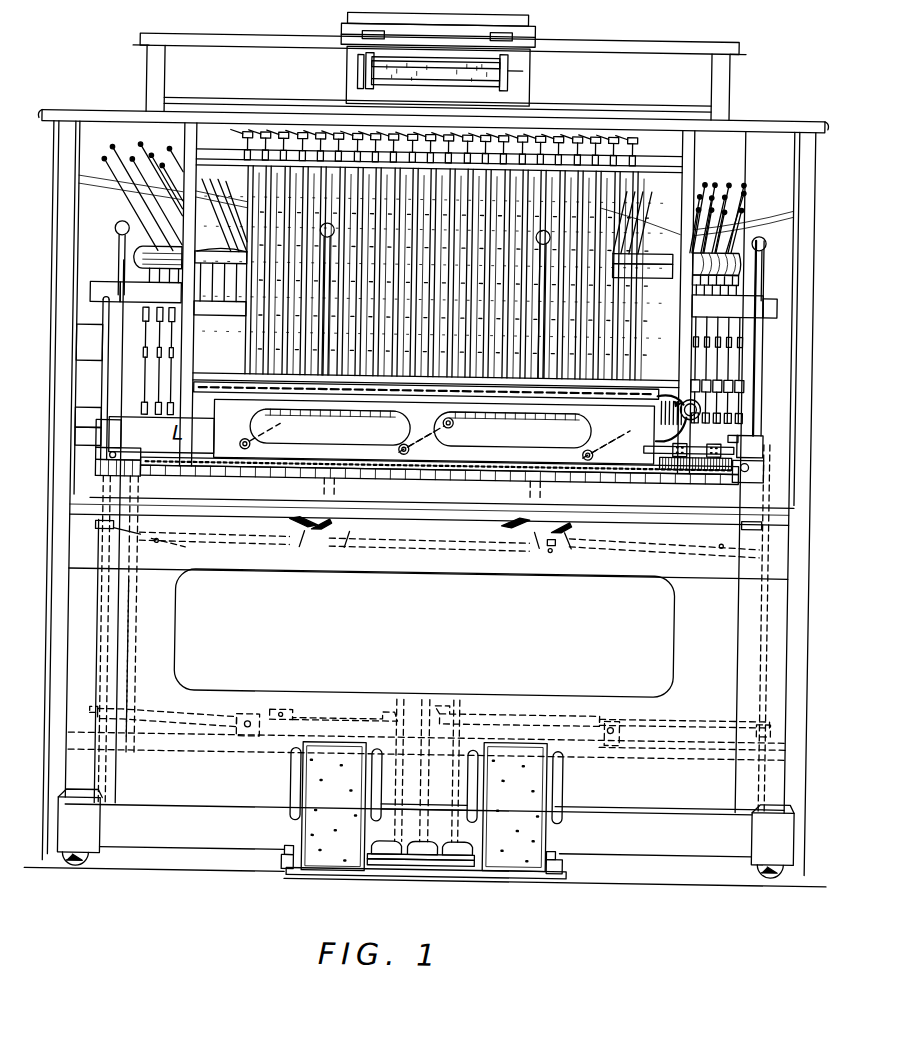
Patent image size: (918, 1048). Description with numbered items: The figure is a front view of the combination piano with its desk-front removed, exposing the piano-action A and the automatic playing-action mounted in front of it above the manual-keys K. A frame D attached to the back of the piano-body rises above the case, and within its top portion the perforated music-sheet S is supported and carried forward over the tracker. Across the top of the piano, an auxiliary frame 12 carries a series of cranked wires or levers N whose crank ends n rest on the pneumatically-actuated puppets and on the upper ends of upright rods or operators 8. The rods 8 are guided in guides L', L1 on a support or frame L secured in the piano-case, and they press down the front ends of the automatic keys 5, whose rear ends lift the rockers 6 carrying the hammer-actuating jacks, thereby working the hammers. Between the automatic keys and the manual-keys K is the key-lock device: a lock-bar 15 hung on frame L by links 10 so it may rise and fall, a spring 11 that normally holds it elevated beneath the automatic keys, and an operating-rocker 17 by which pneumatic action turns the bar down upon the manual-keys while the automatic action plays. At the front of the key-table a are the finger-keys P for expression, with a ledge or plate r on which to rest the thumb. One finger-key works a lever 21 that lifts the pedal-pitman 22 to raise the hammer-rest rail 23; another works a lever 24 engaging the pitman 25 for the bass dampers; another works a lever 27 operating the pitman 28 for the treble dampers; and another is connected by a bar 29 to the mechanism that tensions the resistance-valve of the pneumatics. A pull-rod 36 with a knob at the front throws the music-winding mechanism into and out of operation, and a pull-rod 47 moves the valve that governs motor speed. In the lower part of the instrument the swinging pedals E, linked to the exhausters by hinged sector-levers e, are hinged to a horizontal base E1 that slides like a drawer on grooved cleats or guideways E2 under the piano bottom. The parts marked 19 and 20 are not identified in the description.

The perforated music-sheet S is at (437, 59).
The cranked wires or levers N is at (566, 136).
The frame D is at (716, 90).
The auxiliary frame 12 is at (419, 146).
The crank ends n is at (640, 140).
The support or frame L is at (740, 230).
The guides L' is at (641, 231).
The upright rods or operators 8 is at (437, 276).
The piano-action A is at (221, 247).
The hammer-rest rail 23 is at (129, 278).
The pedal-pitman 22 is at (92, 377).
The pull-rod 36 is at (106, 611).
The rockers or tilting members 6 is at (733, 359).
The pitman 28 is at (737, 601).
The automatic keys or levers 5 is at (427, 399).
The guides L1 is at (639, 383).
The lock-bar 15 is at (434, 431).
The links or guides 10 is at (279, 429).
The spring 11 is at (689, 432).
The manual-keys K is at (452, 470).
The operating-rocker 17 is at (674, 466).
The pull-rod 47 is at (743, 467).
The key-table a is at (429, 516).
The ledge or plate r is at (444, 517).
The finger-keys P is at (439, 552).
The bar 29 is at (421, 557).
The lever 21 is at (151, 538).
The lever 24 is at (186, 543).
The lever 27 is at (673, 542).
The pitman 25 is at (130, 601).
The lever 20 is at (427, 724).
The swinging pedals E is at (424, 807).
The hinged sector-levers e is at (295, 793).
The pedals 19 is at (421, 780).
The horizontal frame or base E1 is at (406, 870).
The grooved cleats or guideways E2 is at (292, 871).